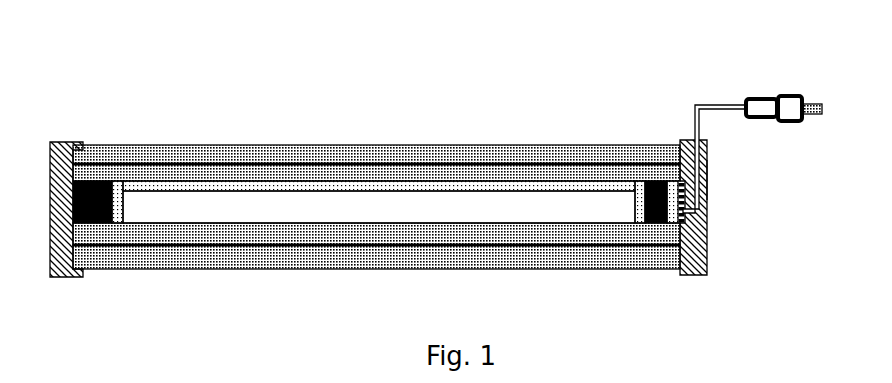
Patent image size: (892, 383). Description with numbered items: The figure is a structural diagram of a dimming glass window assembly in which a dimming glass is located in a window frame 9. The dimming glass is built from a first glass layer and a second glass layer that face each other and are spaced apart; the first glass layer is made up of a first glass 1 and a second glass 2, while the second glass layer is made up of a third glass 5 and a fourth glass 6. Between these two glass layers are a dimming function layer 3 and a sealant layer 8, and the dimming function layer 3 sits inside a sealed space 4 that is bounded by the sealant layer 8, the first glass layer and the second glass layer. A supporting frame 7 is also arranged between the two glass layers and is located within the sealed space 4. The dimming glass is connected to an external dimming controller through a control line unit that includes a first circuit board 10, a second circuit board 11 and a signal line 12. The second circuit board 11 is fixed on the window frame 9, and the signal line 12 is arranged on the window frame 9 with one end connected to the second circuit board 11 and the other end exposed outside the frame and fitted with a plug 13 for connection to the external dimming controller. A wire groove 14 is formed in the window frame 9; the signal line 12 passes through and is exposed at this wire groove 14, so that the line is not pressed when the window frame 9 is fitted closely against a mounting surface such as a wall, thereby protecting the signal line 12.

The first glass 1 is at (274, 155).
The second glass 2 is at (309, 169).
The dimming function layer 3 is at (349, 183).
The sealed space 4 is at (388, 205).
The third glass 5 is at (420, 228).
The fourth glass 6 is at (453, 260).
The supporting frame 7 is at (124, 208).
The sealant layer 8 is at (94, 226).
The window frame 9 is at (678, 141).
The first circuit board 10 is at (656, 226).
The second circuit board 11 is at (674, 226).
The signal line 12 is at (715, 116).
The plug 13 is at (762, 92).
The wire groove 14 is at (709, 184).